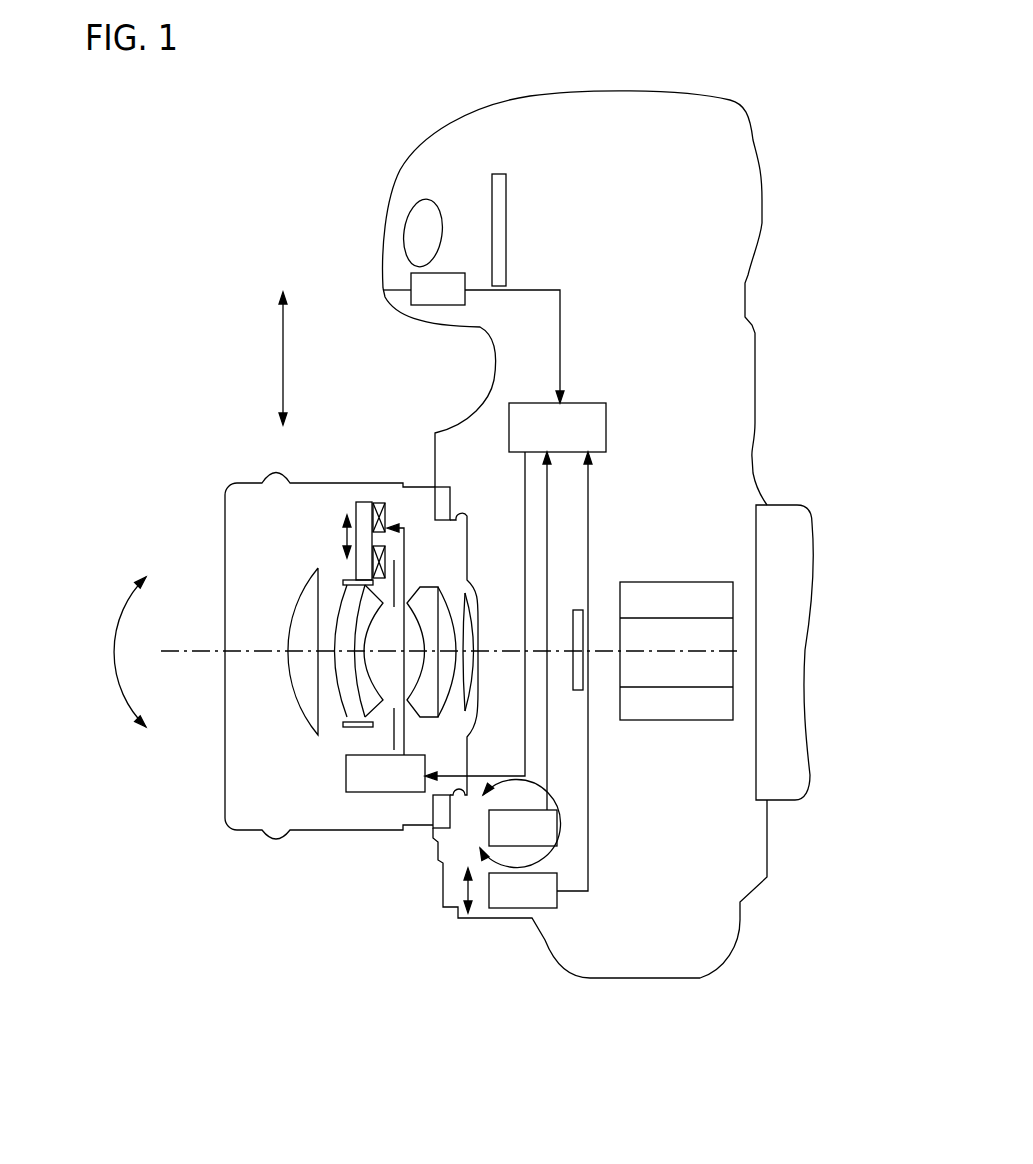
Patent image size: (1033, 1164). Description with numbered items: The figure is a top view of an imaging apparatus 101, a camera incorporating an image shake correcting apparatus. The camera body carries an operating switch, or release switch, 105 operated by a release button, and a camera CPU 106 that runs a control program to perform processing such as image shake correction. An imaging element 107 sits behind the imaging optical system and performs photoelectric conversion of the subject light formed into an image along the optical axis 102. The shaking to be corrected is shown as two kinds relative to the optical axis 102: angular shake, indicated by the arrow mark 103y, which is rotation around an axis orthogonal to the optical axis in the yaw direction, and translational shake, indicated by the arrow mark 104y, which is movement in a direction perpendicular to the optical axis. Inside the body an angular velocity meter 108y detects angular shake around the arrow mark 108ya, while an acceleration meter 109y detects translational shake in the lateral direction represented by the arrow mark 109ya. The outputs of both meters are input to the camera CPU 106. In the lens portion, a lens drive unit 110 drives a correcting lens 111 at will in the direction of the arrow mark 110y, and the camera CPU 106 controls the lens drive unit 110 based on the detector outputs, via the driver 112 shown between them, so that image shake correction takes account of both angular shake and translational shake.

The imaging apparatus 101 is at (762, 217).
The optical axis 102 is at (183, 652).
The arrow mark indicating angular shake 103y is at (114, 628).
The arrow mark indicating translational shake 104y is at (279, 356).
The operating switch (release SW) 105 is at (411, 283).
The camera CPU 106 is at (606, 427).
The imaging element 107 is at (578, 610).
The angular velocity meter 108y is at (557, 832).
The arrow mark for angular shake detection 108ya is at (560, 805).
The acceleration meter 109y is at (515, 910).
The arrow mark for translational shake detection 109ya is at (465, 893).
The lens drive unit 110 is at (356, 510).
The arrow mark for lens drive direction 110y is at (347, 538).
The correcting lens 111 is at (333, 630).
The driver 112 is at (346, 773).